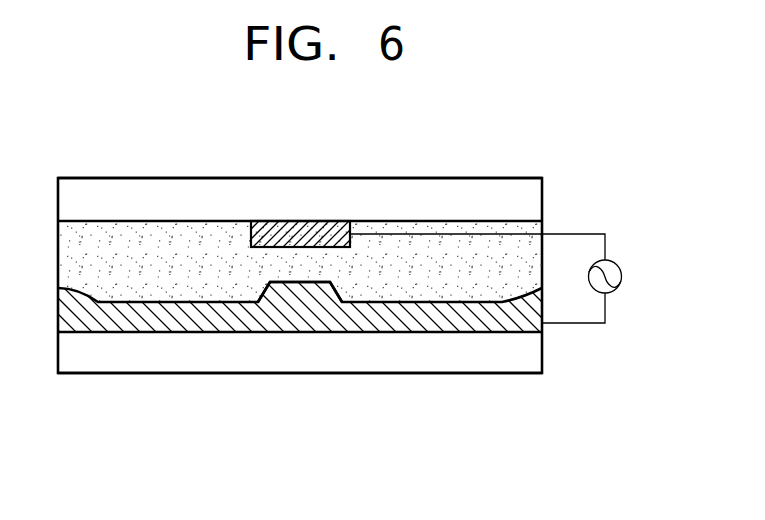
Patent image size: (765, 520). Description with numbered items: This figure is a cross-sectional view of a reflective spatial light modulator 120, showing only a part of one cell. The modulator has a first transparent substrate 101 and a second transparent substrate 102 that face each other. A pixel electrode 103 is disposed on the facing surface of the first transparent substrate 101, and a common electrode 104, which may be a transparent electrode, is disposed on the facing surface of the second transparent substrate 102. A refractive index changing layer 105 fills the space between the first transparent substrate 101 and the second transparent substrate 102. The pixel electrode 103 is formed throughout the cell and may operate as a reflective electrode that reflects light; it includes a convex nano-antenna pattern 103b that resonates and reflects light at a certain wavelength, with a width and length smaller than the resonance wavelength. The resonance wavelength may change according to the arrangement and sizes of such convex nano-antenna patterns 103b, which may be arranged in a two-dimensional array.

The reflective spatial light modulator 120 is at (466, 401).
The first transparent substrate 101 is at (370, 358).
The second transparent substrate 102 is at (432, 195).
The pixel electrode 103 is at (134, 313).
The convex nano-antenna pattern 103b is at (292, 276).
The common electrode 104 is at (302, 231).
The refractive index changing layer 105 is at (167, 232).